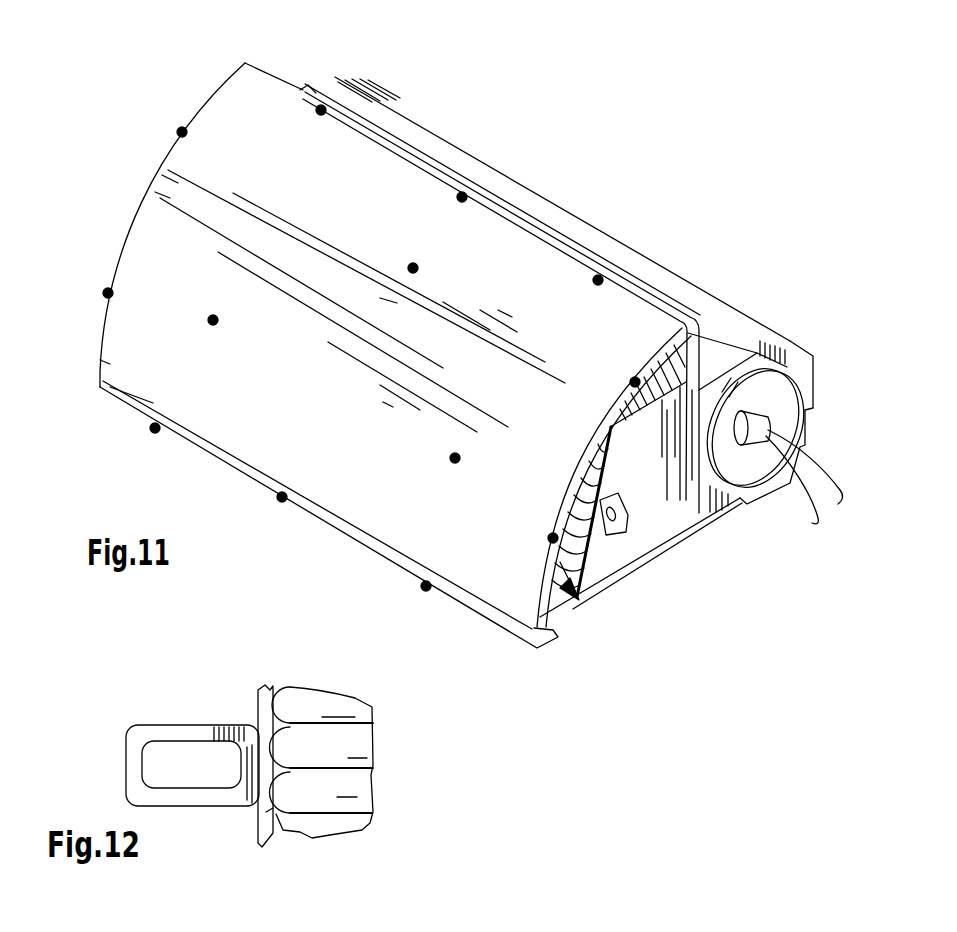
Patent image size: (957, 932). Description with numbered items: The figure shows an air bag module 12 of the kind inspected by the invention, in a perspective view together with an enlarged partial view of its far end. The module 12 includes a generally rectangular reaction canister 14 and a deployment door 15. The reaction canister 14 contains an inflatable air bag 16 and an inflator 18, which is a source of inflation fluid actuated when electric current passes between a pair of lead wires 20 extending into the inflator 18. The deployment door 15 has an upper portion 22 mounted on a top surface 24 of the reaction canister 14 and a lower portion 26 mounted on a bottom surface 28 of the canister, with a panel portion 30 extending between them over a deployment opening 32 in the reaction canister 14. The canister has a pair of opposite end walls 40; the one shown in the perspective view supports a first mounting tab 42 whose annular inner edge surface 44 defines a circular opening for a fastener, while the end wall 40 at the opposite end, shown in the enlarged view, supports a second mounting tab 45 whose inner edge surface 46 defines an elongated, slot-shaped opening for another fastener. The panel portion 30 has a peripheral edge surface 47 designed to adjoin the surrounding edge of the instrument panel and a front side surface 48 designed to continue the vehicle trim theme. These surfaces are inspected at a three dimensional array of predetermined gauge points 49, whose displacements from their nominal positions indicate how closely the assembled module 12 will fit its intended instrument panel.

In FIG. 11, the air bag module 12 is at (148, 60).
In FIG. 11, the reaction canister 14 is at (764, 319).
In FIG. 11, the deployment door 15 is at (101, 329).
In FIG. 11, the inflatable air bag 16 is at (585, 498).
In FIG. 12, the inflatable air bag 16 is at (307, 737).
In FIG. 11, the inflator 18 is at (778, 392).
In FIG. 11, the lead wires 20 is at (813, 470).
In FIG. 11, the upper portion 22 is at (697, 355).
In FIG. 11, the top surface 24 is at (733, 343).
In FIG. 11, the lower portion 26 is at (625, 572).
In FIG. 11, the bottom surface 28 is at (700, 527).
In FIG. 11, the panel portion 30 is at (510, 572).
In FIG. 11, the deployment opening 32 is at (577, 605).
In FIG. 12, the deployment opening 32 is at (273, 808).
In FIG. 11, the end wall 40 is at (673, 495).
In FIG. 12, the end wall 40 is at (258, 712).
In FIG. 11, the first mounting tab 42 is at (623, 537).
In FIG. 11, the annular inner edge surface 44 is at (608, 503).
In FIG. 12, the second mounting tab 45 is at (128, 724).
In FIG. 12, the inner edge surface 46 is at (175, 784).
In FIG. 11, the peripheral edge surface 47 is at (276, 80).
In FIG. 11, the front side surface 48 is at (229, 100).
In FIG. 11, the gauge points 49 is at (321, 105).